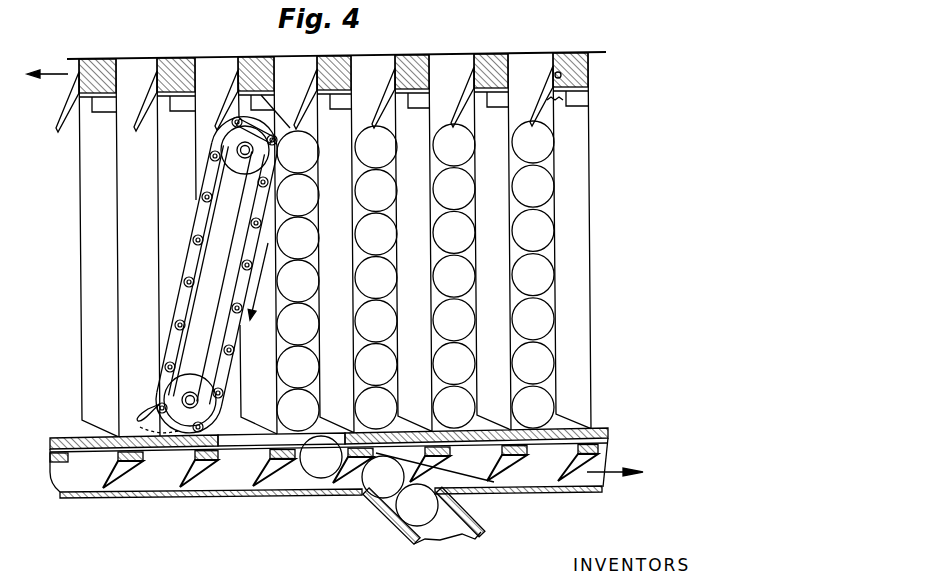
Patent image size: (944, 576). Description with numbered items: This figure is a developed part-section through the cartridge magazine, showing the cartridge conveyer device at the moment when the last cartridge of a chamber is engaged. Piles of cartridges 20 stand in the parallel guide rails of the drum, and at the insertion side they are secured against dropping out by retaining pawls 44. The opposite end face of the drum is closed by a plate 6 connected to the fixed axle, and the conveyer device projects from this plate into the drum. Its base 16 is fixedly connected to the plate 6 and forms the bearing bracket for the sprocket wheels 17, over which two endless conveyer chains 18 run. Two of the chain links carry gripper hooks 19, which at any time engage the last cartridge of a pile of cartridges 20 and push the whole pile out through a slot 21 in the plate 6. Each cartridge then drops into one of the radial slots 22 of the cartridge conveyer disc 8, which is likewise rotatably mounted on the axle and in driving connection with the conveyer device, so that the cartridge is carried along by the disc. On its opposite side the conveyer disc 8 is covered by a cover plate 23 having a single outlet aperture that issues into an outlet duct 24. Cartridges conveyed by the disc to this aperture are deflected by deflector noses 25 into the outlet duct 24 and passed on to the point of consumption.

The plate 6 is at (67, 437).
The cartridge conveyer disc 8 is at (55, 460).
The base 16 is at (182, 343).
The sprocket wheels 17 is at (212, 143).
The endless conveyer chains 18 is at (198, 213).
The gripper hooks 19 is at (268, 88).
The cartridges 20 is at (552, 308).
The slot 21 is at (243, 442).
The radial slots 22 is at (78, 478).
The cover plate 23 is at (541, 493).
The outlet duct 24 is at (440, 530).
The deflector noses 25 is at (468, 482).
The retaining pawls 44 is at (548, 83).